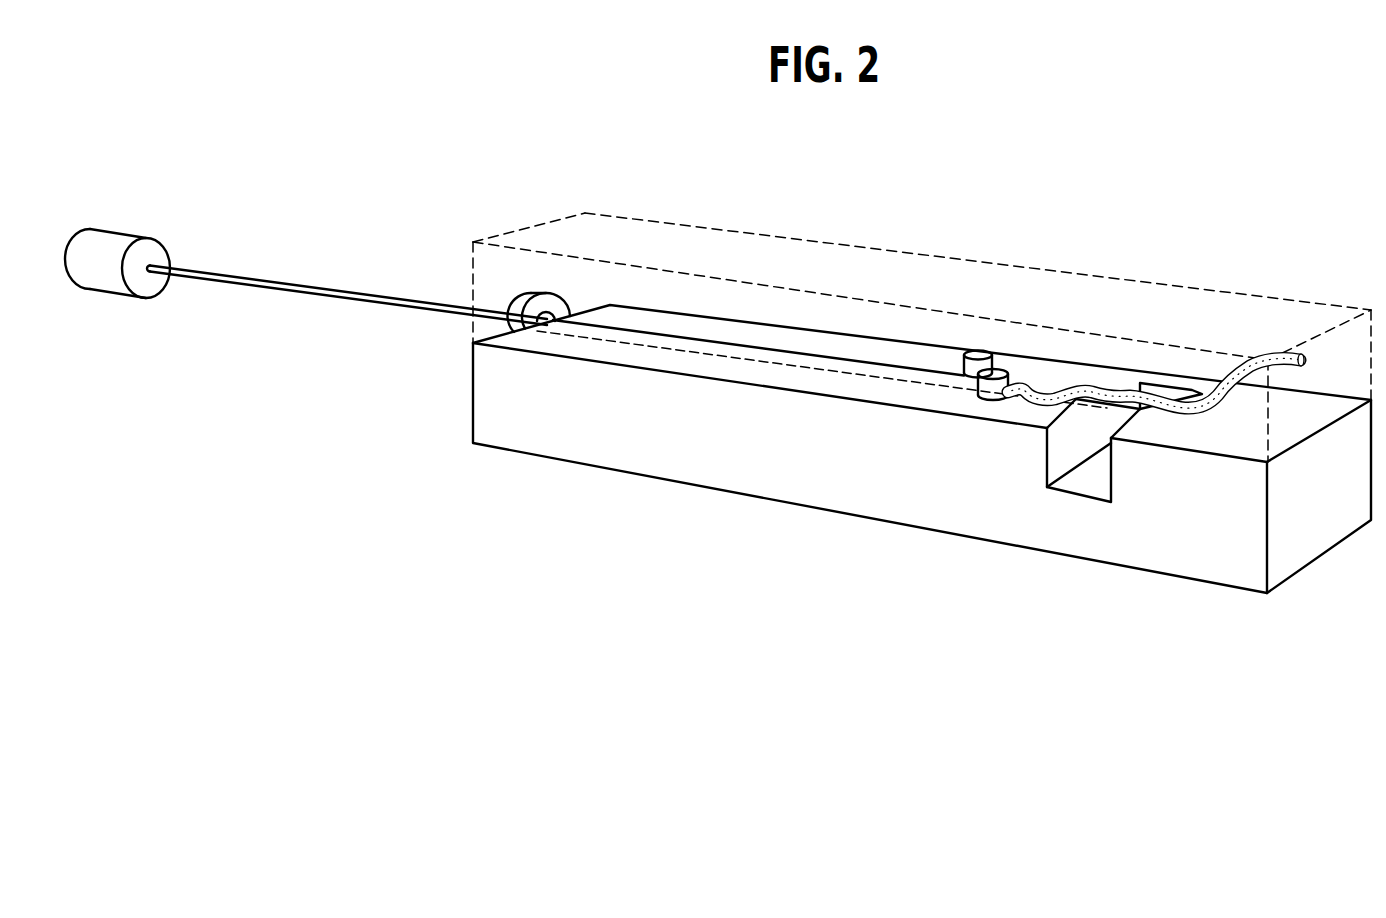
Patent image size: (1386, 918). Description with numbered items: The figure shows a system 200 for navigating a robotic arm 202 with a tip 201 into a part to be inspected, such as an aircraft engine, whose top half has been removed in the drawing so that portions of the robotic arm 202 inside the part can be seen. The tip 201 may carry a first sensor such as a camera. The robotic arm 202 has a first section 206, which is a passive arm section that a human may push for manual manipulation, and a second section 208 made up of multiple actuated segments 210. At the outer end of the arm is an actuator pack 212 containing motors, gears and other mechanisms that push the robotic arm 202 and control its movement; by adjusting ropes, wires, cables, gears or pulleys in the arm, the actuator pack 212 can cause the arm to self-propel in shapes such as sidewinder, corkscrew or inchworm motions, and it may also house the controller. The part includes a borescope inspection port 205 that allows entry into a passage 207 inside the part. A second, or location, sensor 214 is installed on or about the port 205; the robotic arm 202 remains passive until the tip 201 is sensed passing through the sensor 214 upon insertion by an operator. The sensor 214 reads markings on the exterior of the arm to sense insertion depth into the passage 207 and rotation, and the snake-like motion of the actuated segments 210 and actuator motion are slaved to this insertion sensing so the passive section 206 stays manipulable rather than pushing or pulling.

The system 200 is at (1230, 172).
The tip 201 is at (1308, 357).
The robotic arm 202 is at (715, 340).
The borescope inspection (BSI) port 205 is at (547, 327).
The first section 206 is at (398, 307).
The passage 207 is at (648, 352).
The second section 208 is at (1020, 458).
The actuated segments 210 is at (934, 373).
The actuator pack 212 is at (117, 285).
The second (location) sensor 214 is at (518, 305).